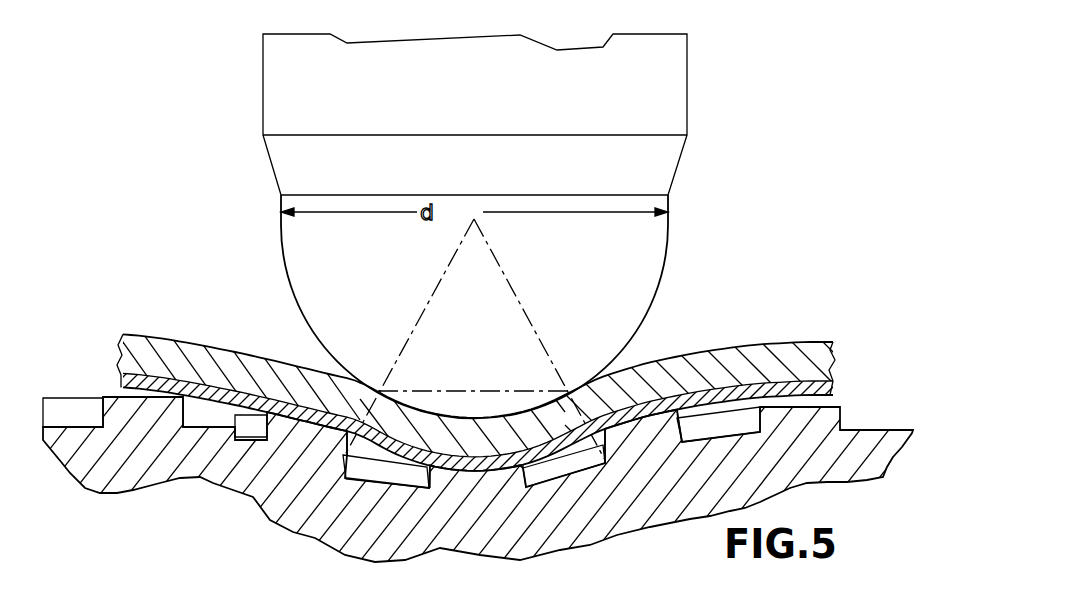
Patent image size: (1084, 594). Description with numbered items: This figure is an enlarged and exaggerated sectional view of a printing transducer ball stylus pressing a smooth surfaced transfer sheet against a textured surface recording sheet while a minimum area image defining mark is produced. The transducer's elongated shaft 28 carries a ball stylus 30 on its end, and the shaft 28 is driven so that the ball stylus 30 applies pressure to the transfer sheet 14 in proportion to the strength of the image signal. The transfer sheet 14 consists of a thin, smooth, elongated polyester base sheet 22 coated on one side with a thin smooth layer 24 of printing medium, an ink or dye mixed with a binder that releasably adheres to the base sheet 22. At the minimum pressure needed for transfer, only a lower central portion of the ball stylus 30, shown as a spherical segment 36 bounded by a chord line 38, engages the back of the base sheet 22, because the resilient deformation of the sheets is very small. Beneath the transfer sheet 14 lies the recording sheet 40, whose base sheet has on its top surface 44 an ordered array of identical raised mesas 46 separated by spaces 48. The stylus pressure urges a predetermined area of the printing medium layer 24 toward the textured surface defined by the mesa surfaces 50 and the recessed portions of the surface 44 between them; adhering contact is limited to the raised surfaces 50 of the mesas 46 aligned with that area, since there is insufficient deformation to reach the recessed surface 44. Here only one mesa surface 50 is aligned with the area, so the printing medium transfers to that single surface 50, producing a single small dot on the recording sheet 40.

The transfer sheet 14 is at (842, 368).
The base sheet 22 is at (757, 347).
The printing medium layer 24 is at (830, 392).
The shaft 28 is at (670, 78).
The ball stylus 30 is at (655, 238).
The spherical segment 36 is at (437, 401).
The chord line 38 is at (517, 401).
The recording sheet 40 is at (899, 400).
The top surface 44 is at (186, 428).
The mesas 46 is at (795, 424).
The spaces 48 is at (100, 417).
The mesa surfaces 50 is at (107, 392).